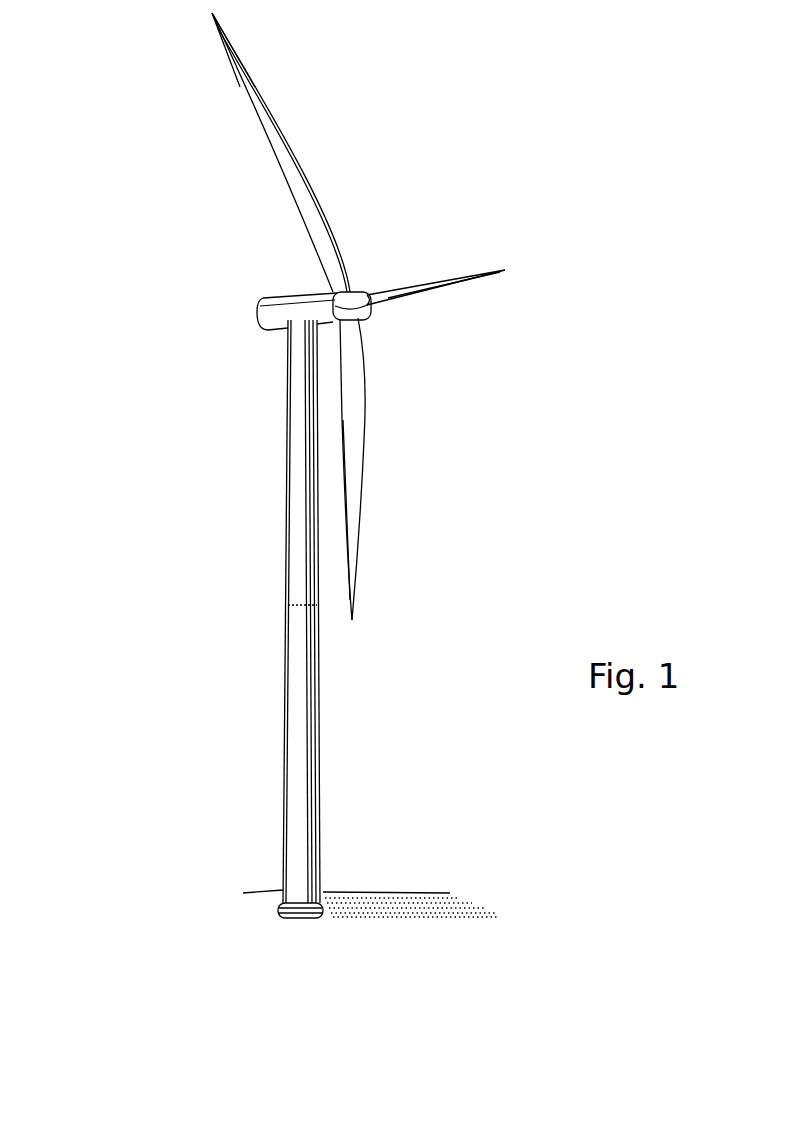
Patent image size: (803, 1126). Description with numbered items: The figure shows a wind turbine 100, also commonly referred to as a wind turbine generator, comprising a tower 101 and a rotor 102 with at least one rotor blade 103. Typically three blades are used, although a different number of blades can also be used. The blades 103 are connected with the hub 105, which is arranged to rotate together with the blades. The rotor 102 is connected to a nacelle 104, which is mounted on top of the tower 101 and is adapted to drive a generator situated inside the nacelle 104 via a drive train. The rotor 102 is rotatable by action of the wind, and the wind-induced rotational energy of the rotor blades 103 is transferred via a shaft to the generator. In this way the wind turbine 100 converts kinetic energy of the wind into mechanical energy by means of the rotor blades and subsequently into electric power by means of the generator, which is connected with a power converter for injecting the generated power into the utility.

The wind turbine 100 is at (134, 102).
The tower 101 is at (280, 604).
The rotor 102 is at (342, 212).
The rotor blade 103 is at (270, 92).
The nacelle 104 is at (258, 320).
The hub 105 is at (368, 320).